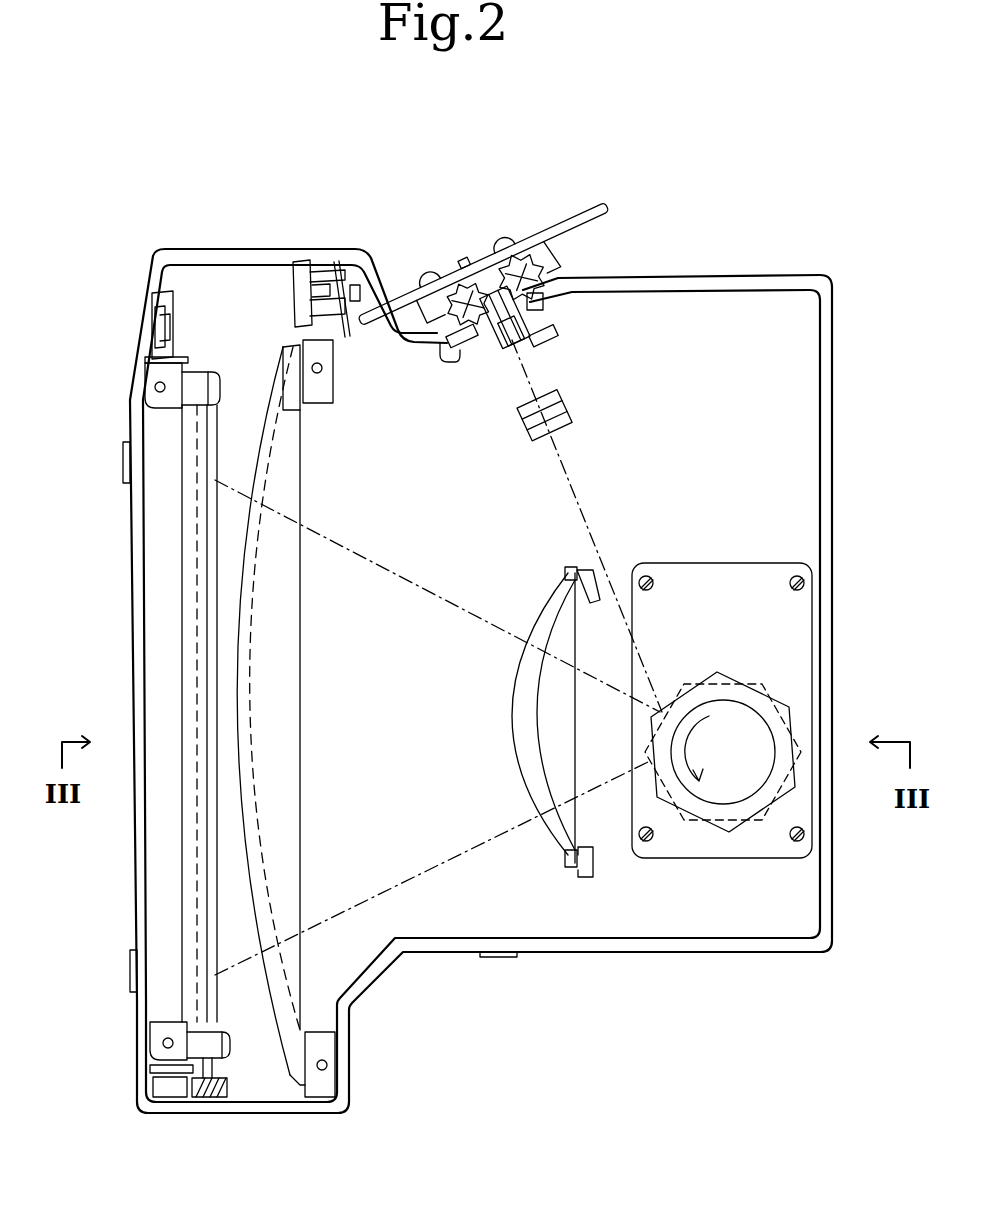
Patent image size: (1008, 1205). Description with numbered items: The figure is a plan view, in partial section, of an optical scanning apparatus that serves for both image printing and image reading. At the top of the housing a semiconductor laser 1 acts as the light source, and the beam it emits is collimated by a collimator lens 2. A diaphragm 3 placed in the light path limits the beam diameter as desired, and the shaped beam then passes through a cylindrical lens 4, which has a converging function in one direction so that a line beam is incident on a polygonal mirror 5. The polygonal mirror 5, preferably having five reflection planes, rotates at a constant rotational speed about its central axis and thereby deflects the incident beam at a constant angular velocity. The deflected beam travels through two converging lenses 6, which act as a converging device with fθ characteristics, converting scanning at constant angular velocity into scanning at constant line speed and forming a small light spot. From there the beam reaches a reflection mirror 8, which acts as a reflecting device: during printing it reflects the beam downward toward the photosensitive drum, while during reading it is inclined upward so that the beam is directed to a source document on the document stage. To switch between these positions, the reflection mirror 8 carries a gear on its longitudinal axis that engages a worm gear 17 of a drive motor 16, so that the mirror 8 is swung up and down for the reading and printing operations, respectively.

The semiconductor laser 1 is at (545, 263).
The collimator lens 2 is at (510, 345).
The diaphragm 3 is at (515, 338).
The cylindrical lens 4 is at (566, 404).
The polygonal mirror 5 is at (727, 680).
The converging lenses 6 is at (272, 993).
The reflection mirror 8 is at (182, 735).
The drive motor 16 is at (163, 1097).
The worm gear 17 is at (215, 1097).